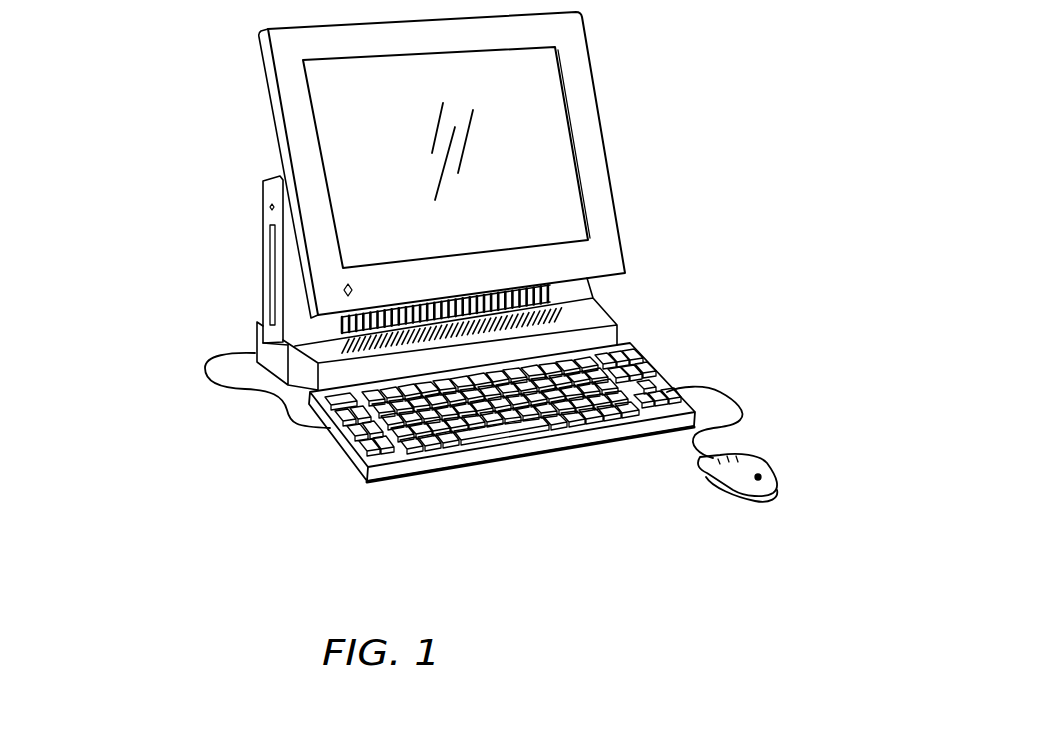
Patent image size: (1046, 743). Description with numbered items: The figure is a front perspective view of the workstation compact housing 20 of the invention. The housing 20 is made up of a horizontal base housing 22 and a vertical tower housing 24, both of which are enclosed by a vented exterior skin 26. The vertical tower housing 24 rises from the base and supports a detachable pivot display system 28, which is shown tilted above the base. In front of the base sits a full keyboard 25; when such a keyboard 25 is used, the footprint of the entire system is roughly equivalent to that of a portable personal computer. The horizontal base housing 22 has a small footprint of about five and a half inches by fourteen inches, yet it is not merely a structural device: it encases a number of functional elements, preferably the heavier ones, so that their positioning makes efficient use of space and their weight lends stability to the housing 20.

The workstation compact housing 20 is at (162, 231).
The horizontal base housing 22 is at (598, 318).
The vertical tower housing 24 is at (262, 209).
The full keyboard 25 is at (643, 357).
The vented exterior skin 26 is at (343, 330).
The detachable pivot display system 28 is at (595, 133).